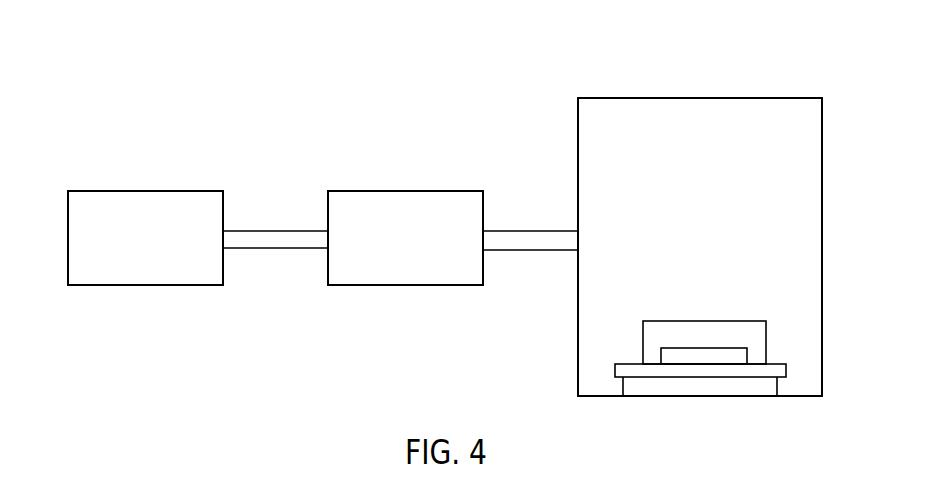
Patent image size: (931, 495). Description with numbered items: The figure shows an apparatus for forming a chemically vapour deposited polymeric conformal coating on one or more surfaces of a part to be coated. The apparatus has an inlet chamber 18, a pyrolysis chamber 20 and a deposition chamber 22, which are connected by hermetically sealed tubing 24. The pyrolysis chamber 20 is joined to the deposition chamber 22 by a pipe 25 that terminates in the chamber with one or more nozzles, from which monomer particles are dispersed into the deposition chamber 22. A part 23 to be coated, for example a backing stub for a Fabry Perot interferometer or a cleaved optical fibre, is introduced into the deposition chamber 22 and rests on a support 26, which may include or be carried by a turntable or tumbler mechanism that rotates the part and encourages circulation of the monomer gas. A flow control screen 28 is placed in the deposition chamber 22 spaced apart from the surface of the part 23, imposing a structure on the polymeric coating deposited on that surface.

The inlet chamber 18 is at (140, 191).
The pyrolysis chamber 20 is at (403, 191).
The deposition chamber 22 is at (703, 98).
The part 23 is at (704, 348).
The hermetically sealed tubing 24 is at (277, 231).
The pipe 25 is at (530, 231).
The support 26 is at (787, 378).
The flow control screen 28 is at (737, 321).